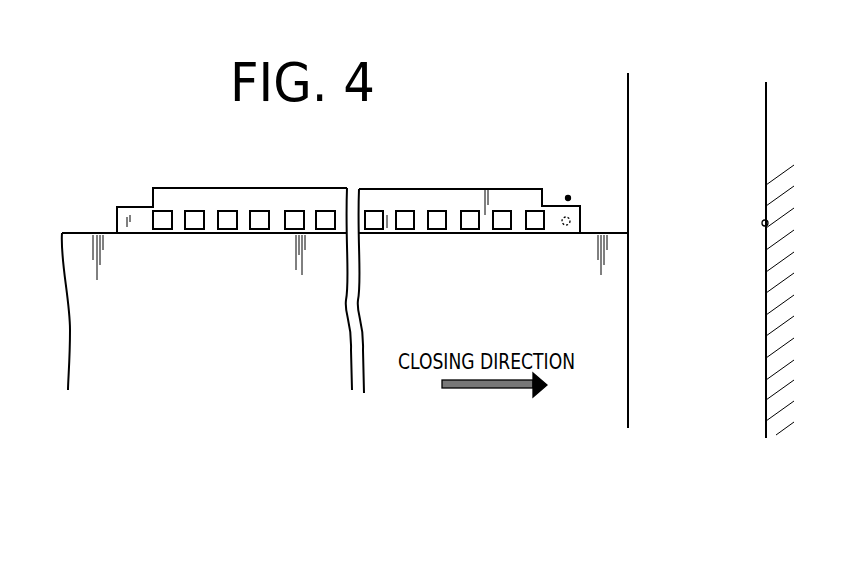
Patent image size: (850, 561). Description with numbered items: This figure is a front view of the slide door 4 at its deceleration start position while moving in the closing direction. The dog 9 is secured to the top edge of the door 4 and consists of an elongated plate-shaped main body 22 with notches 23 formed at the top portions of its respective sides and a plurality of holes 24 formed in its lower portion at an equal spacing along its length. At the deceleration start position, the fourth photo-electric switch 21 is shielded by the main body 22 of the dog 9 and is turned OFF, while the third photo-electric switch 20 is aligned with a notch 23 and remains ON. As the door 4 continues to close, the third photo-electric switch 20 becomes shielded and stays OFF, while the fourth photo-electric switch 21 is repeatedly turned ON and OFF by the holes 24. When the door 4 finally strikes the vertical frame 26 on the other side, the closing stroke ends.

The door 4 is at (612, 314).
The dog 9 is at (418, 200).
The third photo-electric switch 20 is at (571, 197).
The fourth photo-electric switch 21 is at (566, 226).
The main body 22 is at (312, 188).
The notch 23 is at (565, 191).
The hole 24 is at (167, 229).
The vertical frame 26 is at (768, 226).